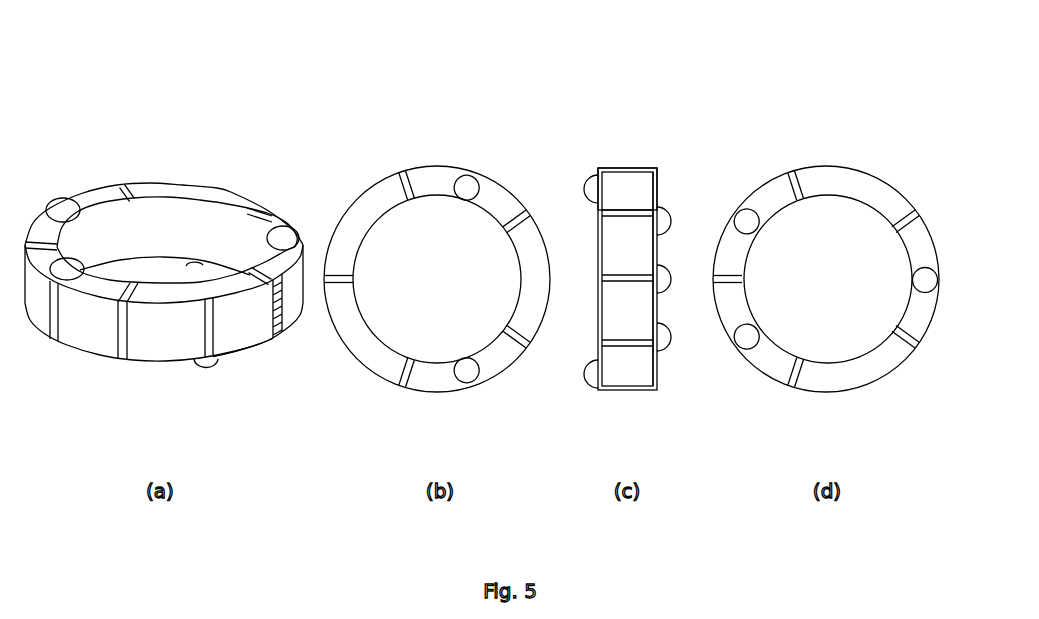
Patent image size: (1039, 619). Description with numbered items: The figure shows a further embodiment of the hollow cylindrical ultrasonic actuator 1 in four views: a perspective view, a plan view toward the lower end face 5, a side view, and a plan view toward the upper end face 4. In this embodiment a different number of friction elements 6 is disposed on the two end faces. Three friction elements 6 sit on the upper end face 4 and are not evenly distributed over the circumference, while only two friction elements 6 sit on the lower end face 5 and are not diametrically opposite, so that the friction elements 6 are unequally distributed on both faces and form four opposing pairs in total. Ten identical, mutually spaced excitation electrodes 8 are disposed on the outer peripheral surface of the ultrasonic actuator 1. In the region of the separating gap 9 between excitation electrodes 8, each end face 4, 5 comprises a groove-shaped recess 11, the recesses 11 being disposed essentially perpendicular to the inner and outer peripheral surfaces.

The ultrasonic actuator 1 is at (192, 158).
The upper end face 4 is at (847, 183).
The lower end face 5 is at (387, 192).
The friction element 6 is at (290, 240).
The excitation electrode 8 is at (243, 332).
The separating gap 9 is at (120, 330).
The groove-shaped recess 11 is at (127, 196).